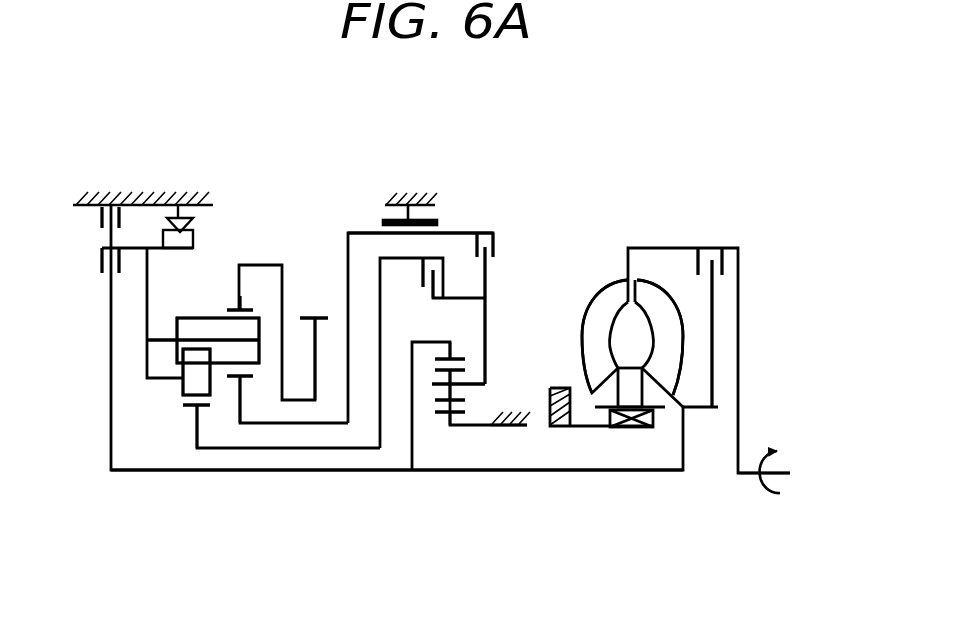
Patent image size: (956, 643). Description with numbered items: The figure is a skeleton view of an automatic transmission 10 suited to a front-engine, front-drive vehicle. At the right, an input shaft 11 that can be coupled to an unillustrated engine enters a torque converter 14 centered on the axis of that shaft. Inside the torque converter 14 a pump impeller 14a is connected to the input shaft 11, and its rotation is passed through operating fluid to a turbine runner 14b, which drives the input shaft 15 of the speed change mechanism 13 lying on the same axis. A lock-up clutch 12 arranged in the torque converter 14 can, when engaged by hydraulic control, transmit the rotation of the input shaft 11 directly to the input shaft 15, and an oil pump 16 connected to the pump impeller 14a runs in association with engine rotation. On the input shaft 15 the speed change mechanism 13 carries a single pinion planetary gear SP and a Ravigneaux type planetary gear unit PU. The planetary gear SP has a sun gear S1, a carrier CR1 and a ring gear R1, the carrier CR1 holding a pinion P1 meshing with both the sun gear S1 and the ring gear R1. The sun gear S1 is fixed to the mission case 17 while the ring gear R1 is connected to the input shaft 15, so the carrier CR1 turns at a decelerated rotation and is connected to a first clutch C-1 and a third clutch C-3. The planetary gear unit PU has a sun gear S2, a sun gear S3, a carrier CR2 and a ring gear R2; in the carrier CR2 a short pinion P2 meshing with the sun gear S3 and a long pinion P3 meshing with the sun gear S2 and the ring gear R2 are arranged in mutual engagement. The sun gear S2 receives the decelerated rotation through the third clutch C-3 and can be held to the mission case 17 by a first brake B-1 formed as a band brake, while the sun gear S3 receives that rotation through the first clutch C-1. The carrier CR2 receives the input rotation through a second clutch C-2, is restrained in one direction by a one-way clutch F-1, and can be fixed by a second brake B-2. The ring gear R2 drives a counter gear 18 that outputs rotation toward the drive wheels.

The automatic transmission 10 is at (322, 173).
The input shaft 11 is at (740, 474).
The lock-up clutch 12 is at (723, 236).
The speed change mechanism 13 is at (353, 190).
The torque converter 14 is at (611, 256).
The pump impeller 14a is at (590, 320).
The turbine runner 14b is at (667, 313).
The input shaft of the speed change mechanism 15 is at (622, 471).
The oil pump 16 is at (548, 400).
The mission case 17 is at (200, 192).
The counter gear 18 is at (320, 317).
The first brake B-1 is at (410, 193).
The second brake B-2 is at (110, 195).
The first clutch C-1 is at (408, 278).
The second clutch C-2 is at (94, 275).
The third clutch C-3 is at (501, 266).
The one-way clutch F-1 is at (180, 205).
The planetary gear unit PU is at (218, 283).
The planetary gear SP is at (500, 333).
The carrier CR1 is at (486, 371).
The carrier CR2 is at (147, 348).
The pinion P1 is at (465, 391).
The short pinion P2 is at (182, 387).
The long pinion P3 is at (194, 318).
The ring gear R1 is at (457, 355).
The ring gear R2 is at (250, 288).
The sun gear S1 is at (444, 414).
The sun gear S2 is at (242, 380).
The sun gear S3 is at (190, 410).